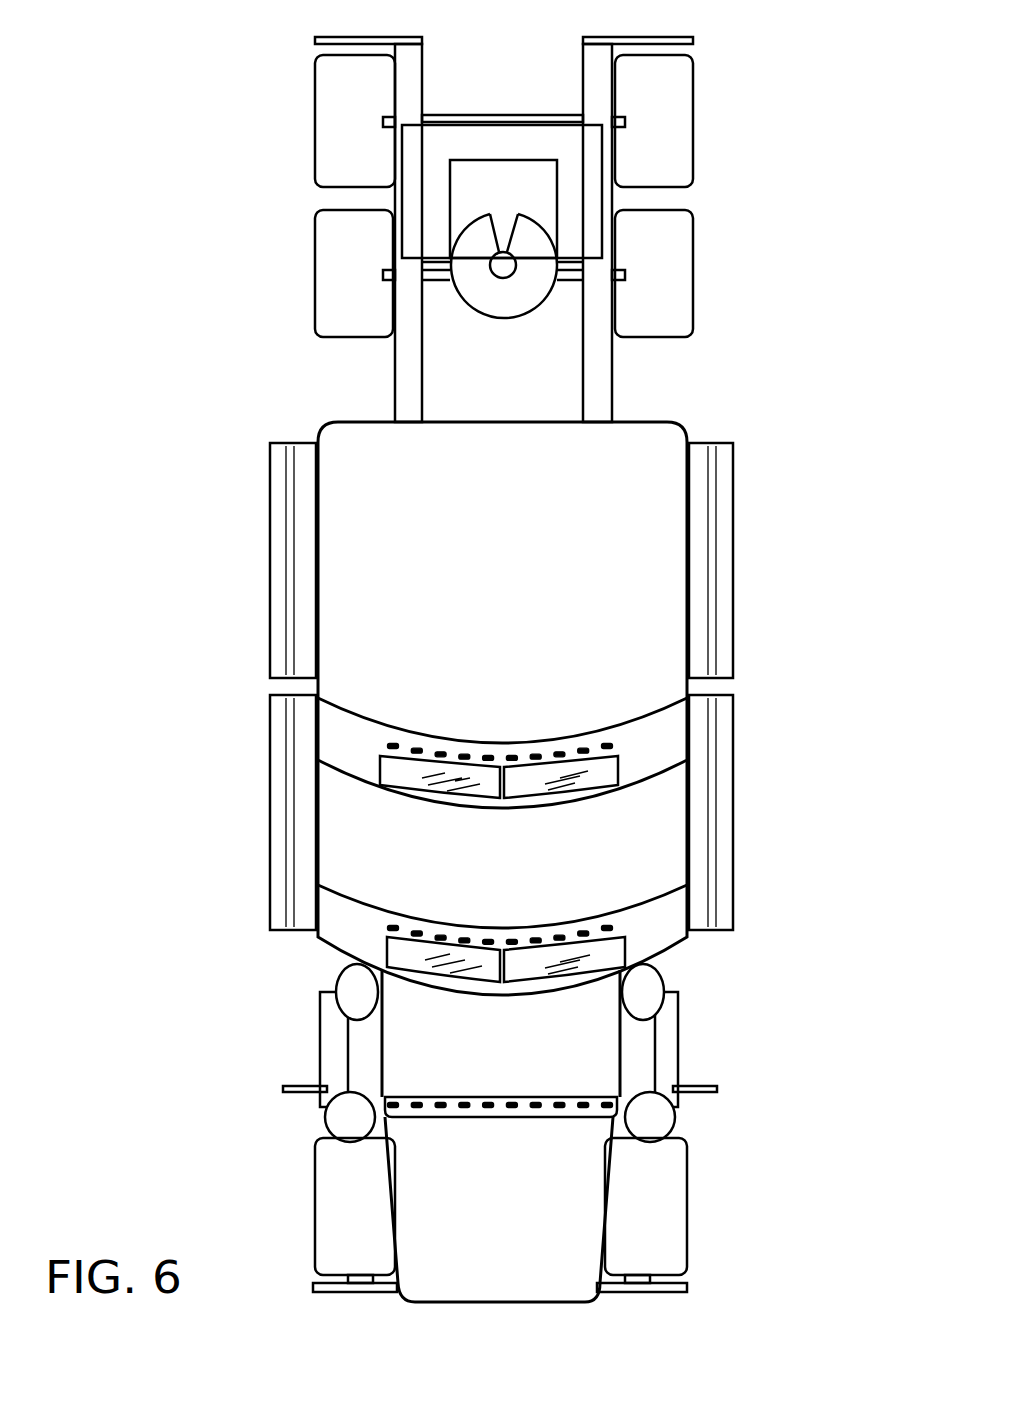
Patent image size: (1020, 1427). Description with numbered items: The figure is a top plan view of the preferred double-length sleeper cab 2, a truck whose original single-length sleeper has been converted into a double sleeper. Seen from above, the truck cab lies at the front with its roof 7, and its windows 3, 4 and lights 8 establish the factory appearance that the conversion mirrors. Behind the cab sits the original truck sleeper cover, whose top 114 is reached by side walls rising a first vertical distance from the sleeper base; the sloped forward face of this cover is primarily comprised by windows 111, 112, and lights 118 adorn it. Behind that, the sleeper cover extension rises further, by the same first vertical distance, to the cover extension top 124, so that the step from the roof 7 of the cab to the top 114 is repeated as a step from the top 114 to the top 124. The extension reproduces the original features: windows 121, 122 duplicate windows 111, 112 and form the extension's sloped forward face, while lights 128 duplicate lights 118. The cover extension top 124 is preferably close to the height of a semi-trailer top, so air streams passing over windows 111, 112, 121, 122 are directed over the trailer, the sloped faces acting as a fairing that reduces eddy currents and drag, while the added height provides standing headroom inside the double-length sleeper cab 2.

The double-length sleeper cab 2 is at (117, 107).
The window 3 is at (427, 1115).
The window 4 is at (580, 1115).
The roof 7 is at (509, 1064).
The lights 8 is at (582, 1098).
The window 111 is at (390, 945).
The window 112 is at (627, 943).
The top of original truck sleeper cover 114 is at (522, 879).
The lights 118 is at (560, 940).
The window 121 is at (392, 772).
The window 122 is at (610, 775).
The cover extension top 124 is at (525, 596).
The lights 128 is at (560, 750).